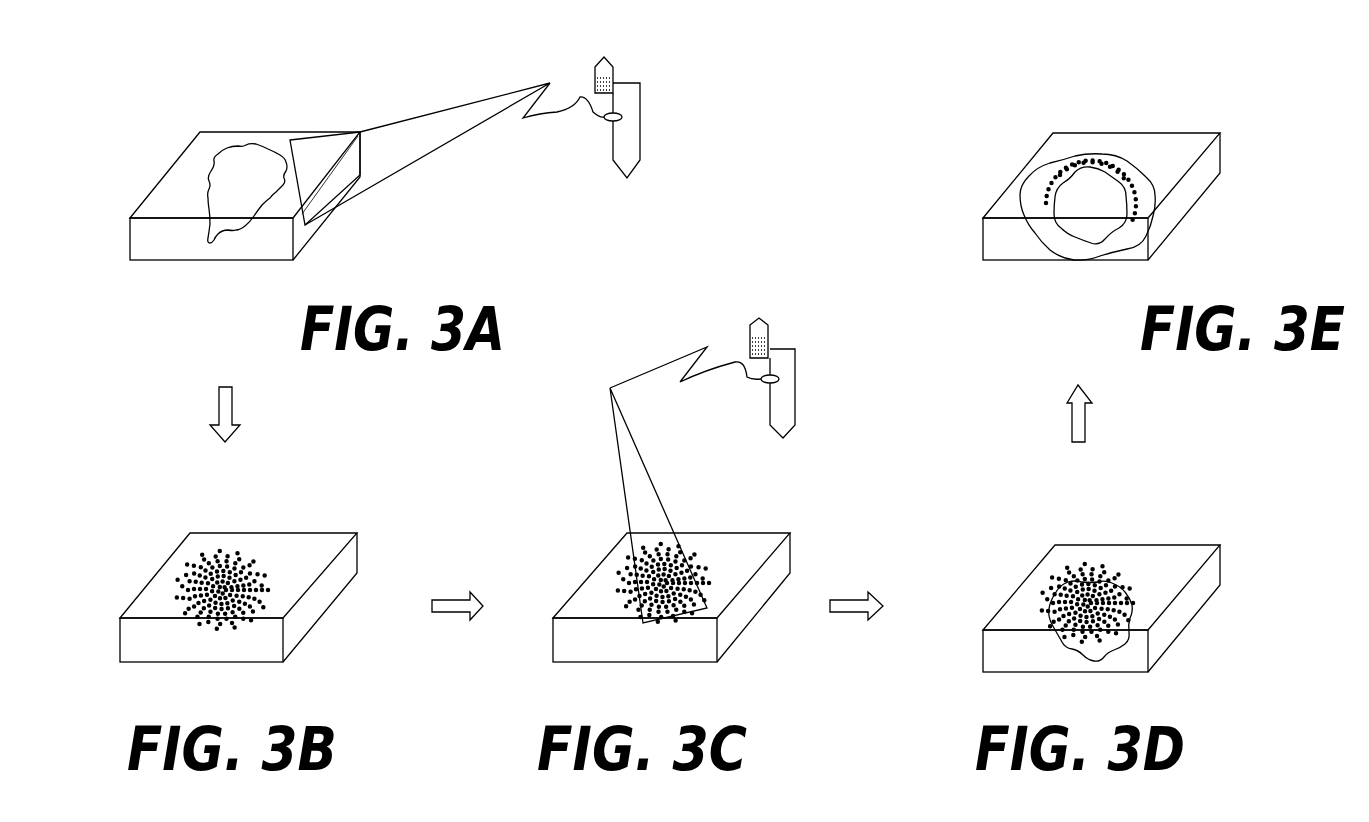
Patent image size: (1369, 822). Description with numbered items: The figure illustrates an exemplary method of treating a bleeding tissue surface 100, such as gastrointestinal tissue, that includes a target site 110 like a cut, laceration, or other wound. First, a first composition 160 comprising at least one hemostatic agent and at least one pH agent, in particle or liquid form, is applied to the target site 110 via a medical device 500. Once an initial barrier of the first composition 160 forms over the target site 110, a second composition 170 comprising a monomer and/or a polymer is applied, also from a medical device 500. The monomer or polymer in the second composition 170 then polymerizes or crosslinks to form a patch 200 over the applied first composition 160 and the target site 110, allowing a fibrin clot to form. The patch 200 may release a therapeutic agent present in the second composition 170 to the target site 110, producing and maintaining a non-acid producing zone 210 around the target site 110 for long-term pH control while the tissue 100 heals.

In FIG. 3A, the tissue 100 is at (135, 241).
In FIG. 3B, the tissue 100 is at (133, 646).
In FIG. 3C, the tissue 100 is at (562, 645).
In FIG. 3D, the tissue 100 is at (995, 652).
In FIG. 3E, the tissue 100 is at (1101, 196).
In FIG. 3A, the target site 110 is at (207, 176).
In FIG. 3A, the first composition 160 is at (613, 75).
In FIG. 3B, the first composition 160 is at (200, 572).
In FIG. 3C, the first composition 160 is at (663, 583).
In FIG. 3D, the first composition 160 is at (1093, 553).
In FIG. 3C, the second composition 170 is at (768, 340).
In FIG. 3D, the patch 200 is at (1107, 633).
In FIG. 3E, the patch 200 is at (1105, 205).
In FIG. 3E, the non-acid producing zone 210 is at (1030, 193).
In FIG. 3A, the medical device 500 is at (640, 139).
In FIG. 3C, the medical device 500 is at (795, 408).